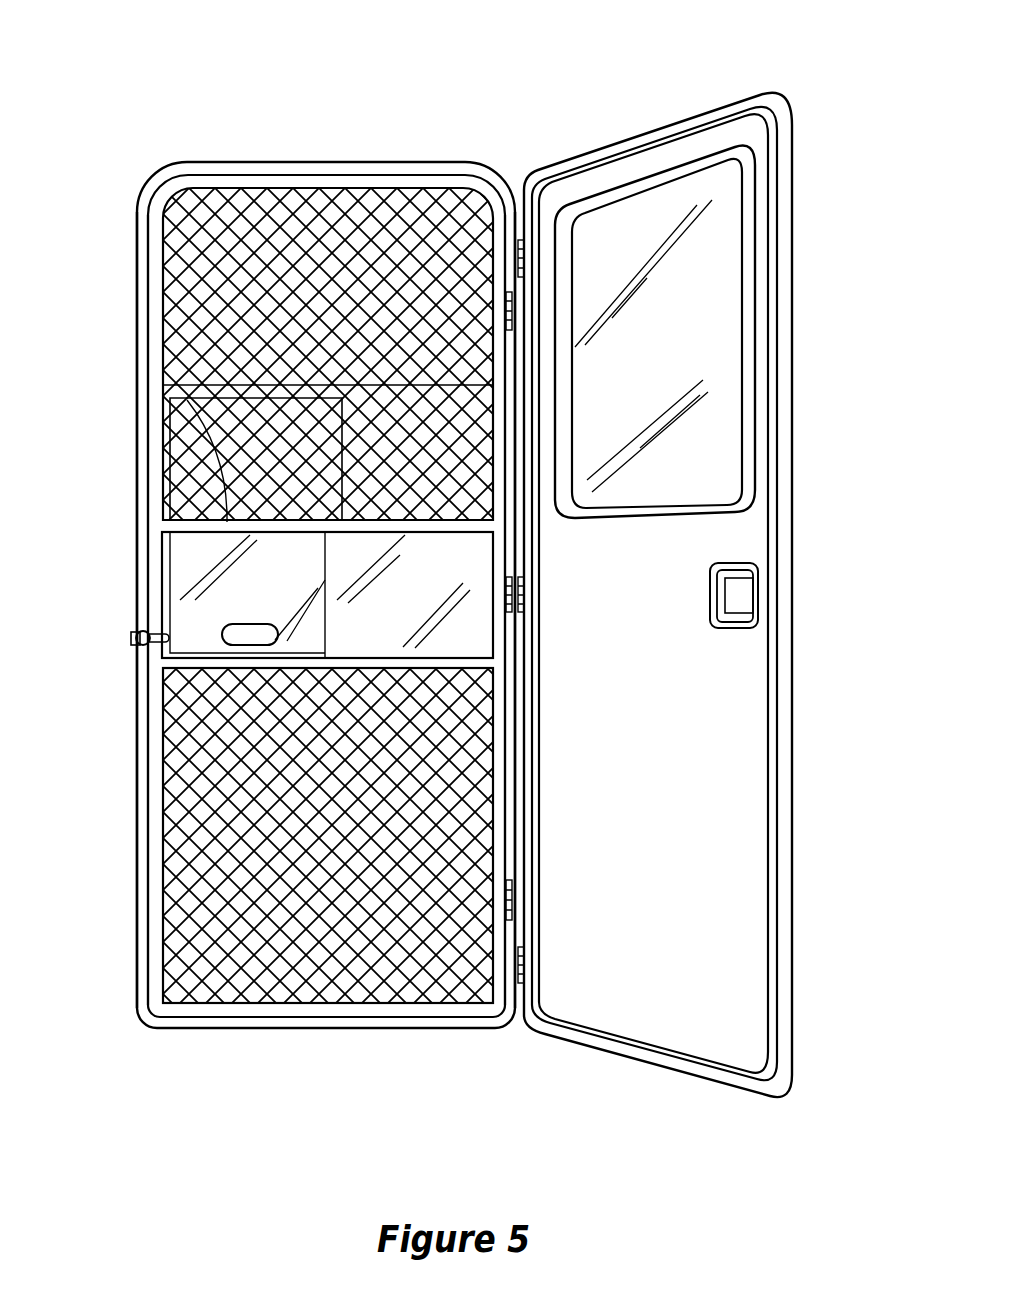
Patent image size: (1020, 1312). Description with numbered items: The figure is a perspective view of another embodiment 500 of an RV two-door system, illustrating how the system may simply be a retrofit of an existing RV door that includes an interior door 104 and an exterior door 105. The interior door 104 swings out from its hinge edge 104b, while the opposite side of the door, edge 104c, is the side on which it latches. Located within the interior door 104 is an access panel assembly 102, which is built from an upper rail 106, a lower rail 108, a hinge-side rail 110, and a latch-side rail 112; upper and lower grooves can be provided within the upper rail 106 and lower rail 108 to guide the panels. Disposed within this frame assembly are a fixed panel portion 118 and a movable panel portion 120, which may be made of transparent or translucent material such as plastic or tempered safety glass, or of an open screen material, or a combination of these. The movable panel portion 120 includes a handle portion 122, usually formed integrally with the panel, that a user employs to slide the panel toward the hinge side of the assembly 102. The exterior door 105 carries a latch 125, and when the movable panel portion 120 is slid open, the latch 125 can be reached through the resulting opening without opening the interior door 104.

The embodiment 500 is at (486, 114).
The access panel assembly 102 is at (128, 500).
The interior door 104 is at (156, 238).
The hinge edge 104b is at (519, 181).
The latch side frame member 104c is at (130, 762).
The exterior door 105 is at (782, 142).
The upper rail 106 is at (179, 408).
The lower rail 108 is at (230, 662).
The hinge-side rail 110 is at (497, 571).
The latch-side rail 112 is at (157, 556).
The fixed panel portion 118 is at (432, 607).
The movable panel portion 120 is at (272, 607).
The handle portion 122 is at (232, 628).
The latch 125 is at (740, 596).